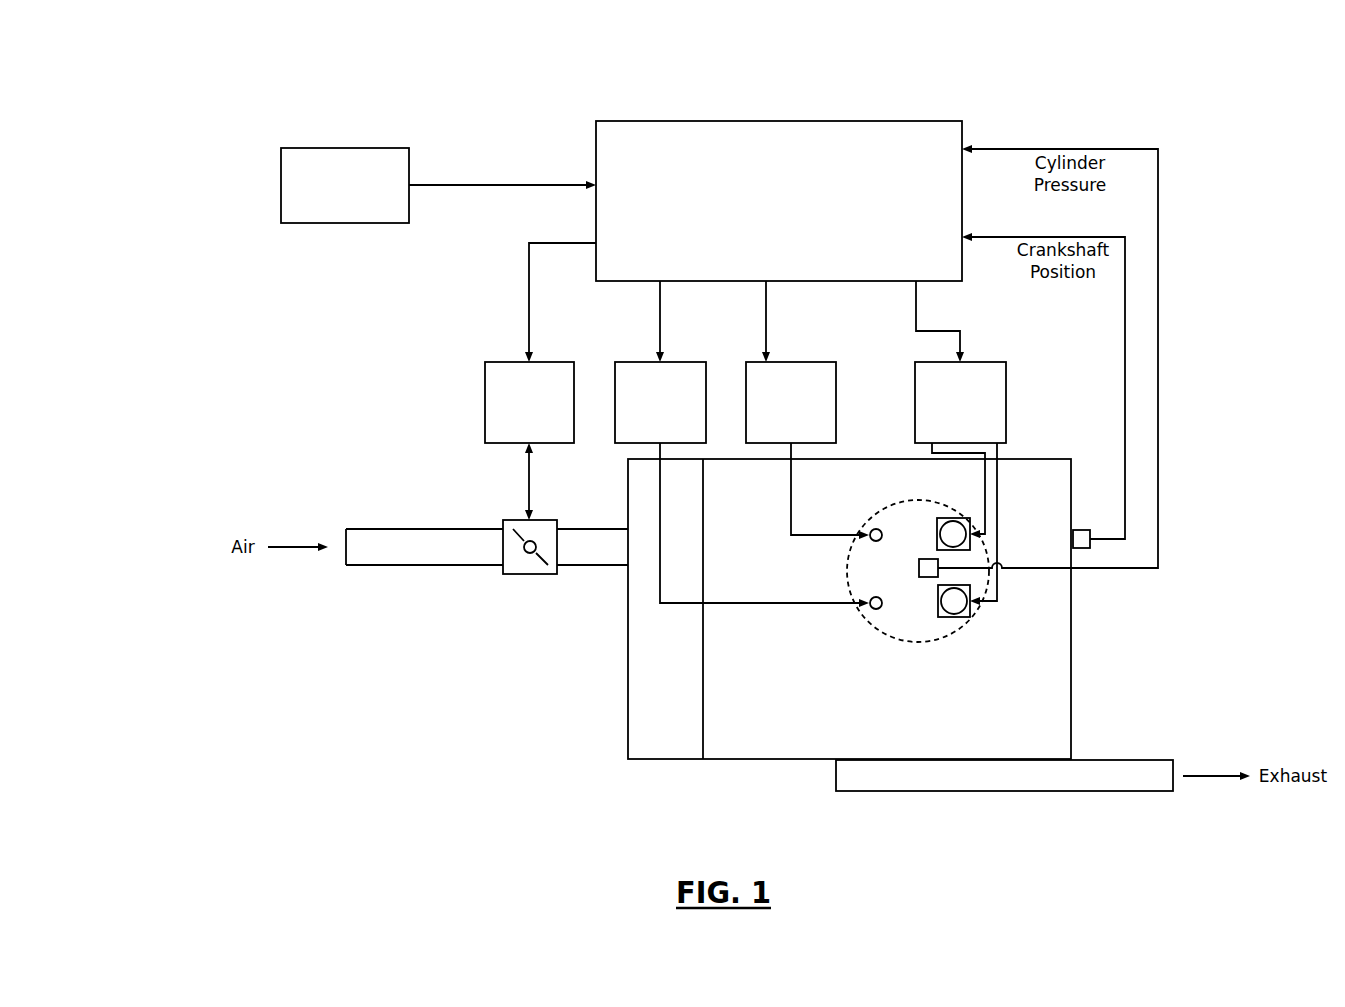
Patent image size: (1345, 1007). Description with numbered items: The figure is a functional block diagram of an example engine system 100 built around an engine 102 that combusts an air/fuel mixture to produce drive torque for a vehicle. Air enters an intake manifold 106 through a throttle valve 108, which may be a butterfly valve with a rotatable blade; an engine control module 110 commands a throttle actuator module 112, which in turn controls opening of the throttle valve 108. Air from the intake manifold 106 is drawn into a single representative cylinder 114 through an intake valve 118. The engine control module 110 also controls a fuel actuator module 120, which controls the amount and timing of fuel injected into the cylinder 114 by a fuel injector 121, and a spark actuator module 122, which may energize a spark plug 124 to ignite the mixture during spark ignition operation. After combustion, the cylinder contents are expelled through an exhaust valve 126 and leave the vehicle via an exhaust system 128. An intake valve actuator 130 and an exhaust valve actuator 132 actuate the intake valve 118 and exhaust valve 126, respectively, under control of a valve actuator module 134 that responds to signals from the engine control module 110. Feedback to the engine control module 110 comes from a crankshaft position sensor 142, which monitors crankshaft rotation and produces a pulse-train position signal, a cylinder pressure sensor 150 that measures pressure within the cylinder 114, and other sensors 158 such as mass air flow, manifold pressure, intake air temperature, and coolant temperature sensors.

The engine system 100 is at (164, 69).
The engine 102 is at (1038, 459).
The intake manifold 106 is at (628, 490).
The throttle valve 108 is at (526, 574).
The engine control module 110 is at (776, 121).
The throttle actuator module 112 is at (503, 362).
The cylinder 114 is at (893, 637).
The intake valve 118 is at (953, 518).
The fuel actuator module 120 is at (680, 362).
The fuel injector 121 is at (872, 609).
The spark actuator module 122 is at (782, 362).
The spark plug 124 is at (870, 525).
The exhaust valve 126 is at (965, 617).
The exhaust system 128 is at (1127, 791).
The intake valve actuator 130 is at (947, 520).
The exhaust valve actuator 132 is at (943, 617).
The valve actuator module 134 is at (915, 367).
The crankshaft position sensor 142 is at (1073, 535).
The cylinder pressure sensor 150 is at (923, 560).
The other sensors 158 is at (342, 148).